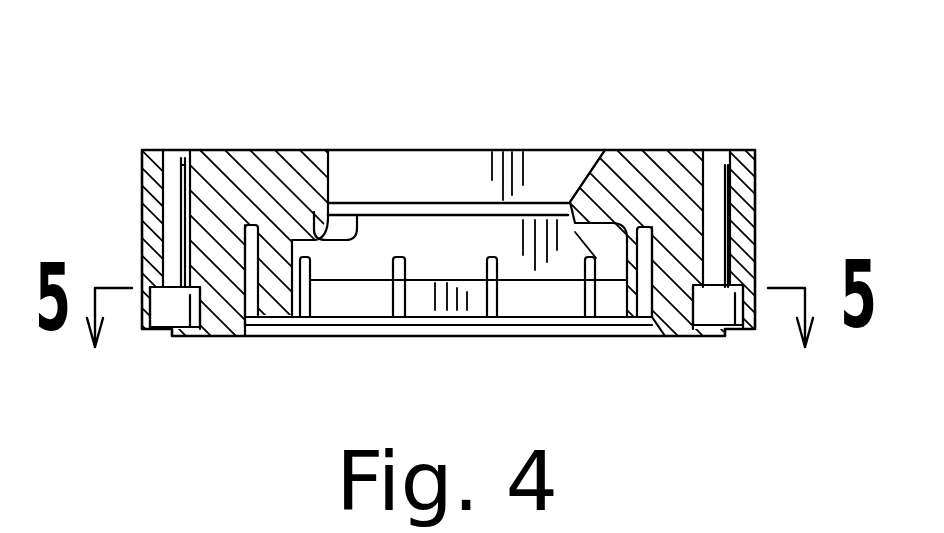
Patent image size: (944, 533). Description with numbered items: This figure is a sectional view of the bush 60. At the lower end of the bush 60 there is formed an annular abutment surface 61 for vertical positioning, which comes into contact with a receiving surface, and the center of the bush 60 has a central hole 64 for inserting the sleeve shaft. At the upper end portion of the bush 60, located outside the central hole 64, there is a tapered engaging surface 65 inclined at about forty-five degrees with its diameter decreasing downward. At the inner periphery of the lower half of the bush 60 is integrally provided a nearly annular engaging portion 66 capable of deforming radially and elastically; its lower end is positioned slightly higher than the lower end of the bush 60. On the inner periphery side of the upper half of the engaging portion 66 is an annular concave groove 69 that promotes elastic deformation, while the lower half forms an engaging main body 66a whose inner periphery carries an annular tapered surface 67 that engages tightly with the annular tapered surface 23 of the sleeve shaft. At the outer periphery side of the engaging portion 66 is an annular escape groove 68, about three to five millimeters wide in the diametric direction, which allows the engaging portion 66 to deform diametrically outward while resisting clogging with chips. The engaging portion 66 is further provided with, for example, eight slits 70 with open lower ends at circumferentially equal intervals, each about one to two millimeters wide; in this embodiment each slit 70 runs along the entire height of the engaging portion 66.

The bush 60 is at (722, 133).
The annular abutment surface 61 is at (212, 338).
The annular tapered surface 23 is at (208, 225).
The central hole 64 is at (340, 236).
The tapered engaging surface 65 is at (590, 152).
The engaging portion 66 is at (632, 230).
The engaging main body 66a is at (640, 315).
The annular tapered surface 67 is at (590, 302).
The annular escape groove 68 is at (243, 298).
The annular concave groove 69 is at (303, 256).
The slit 70 is at (393, 295).